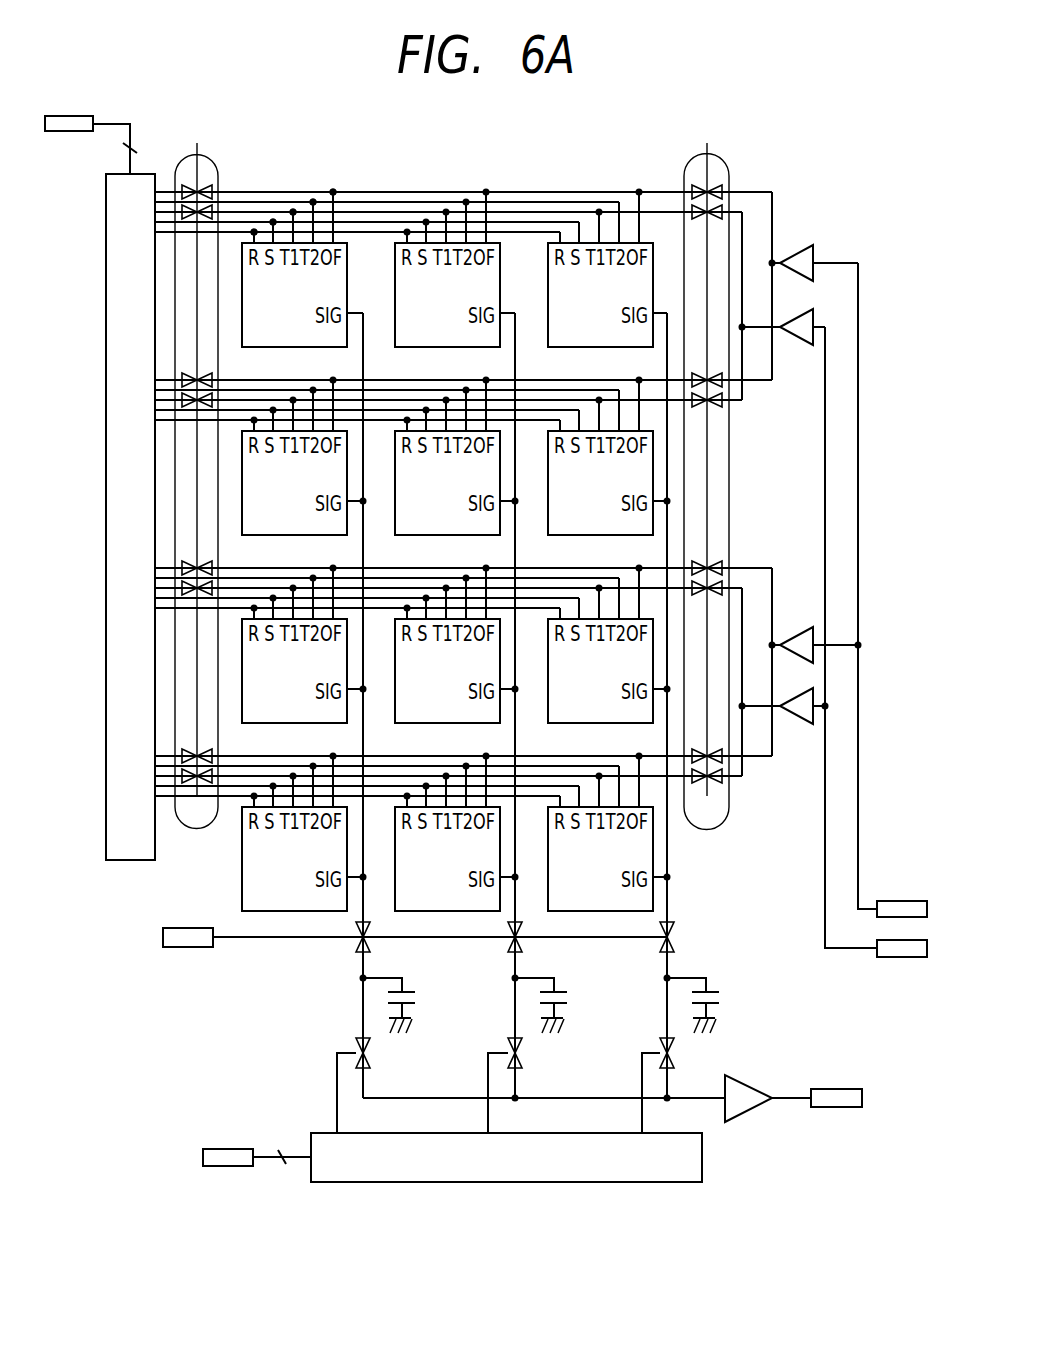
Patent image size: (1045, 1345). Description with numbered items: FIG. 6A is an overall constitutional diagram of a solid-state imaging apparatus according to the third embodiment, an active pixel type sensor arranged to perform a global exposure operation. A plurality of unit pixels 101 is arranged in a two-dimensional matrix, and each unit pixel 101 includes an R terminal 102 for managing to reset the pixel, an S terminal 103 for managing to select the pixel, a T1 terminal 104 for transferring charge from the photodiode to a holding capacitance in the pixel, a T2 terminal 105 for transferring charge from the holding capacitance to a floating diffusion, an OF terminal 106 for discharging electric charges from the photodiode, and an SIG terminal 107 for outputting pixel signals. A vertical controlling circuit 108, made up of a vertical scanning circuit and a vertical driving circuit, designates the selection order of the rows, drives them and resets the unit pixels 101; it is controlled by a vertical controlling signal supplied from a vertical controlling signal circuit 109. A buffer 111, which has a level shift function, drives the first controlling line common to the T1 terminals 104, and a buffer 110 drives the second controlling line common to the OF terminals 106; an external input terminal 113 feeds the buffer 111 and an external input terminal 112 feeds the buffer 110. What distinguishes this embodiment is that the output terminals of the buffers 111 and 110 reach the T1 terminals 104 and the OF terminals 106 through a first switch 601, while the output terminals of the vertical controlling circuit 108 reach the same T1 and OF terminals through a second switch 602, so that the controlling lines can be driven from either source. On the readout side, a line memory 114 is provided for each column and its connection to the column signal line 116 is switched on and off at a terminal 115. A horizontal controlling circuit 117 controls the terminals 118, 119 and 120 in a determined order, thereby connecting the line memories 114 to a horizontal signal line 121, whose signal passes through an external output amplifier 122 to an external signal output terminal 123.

The unit pixel 101 is at (297, 347).
The R terminal 102 is at (246, 228).
The S terminal 103 is at (270, 228).
The T1 terminal 104 is at (289, 228).
The T2 terminal 105 is at (317, 228).
The OF terminal 106 is at (333, 268).
The SIG terminal 107 is at (329, 297).
The vertical controlling circuit 108 is at (122, 173).
The vertical controlling signal circuit 109 is at (70, 115).
The buffer 110 is at (795, 252).
The buffer 111 is at (797, 338).
The external input terminal 112 is at (904, 900).
The external input terminal 113 is at (900, 959).
The line memory 114 is at (405, 981).
The terminal 115 is at (163, 937).
The column signal line 116 is at (363, 736).
The horizontal controlling circuit 117 is at (705, 1157).
The terminal 118 is at (351, 1052).
The terminal 119 is at (503, 1052).
The terminal 120 is at (657, 1052).
The horizontal signal line 121 is at (699, 1093).
The external output amplifier 122 is at (752, 1087).
The external signal output terminal 123 is at (838, 1089).
The first switch 601 is at (726, 162).
The second switch 602 is at (180, 158).